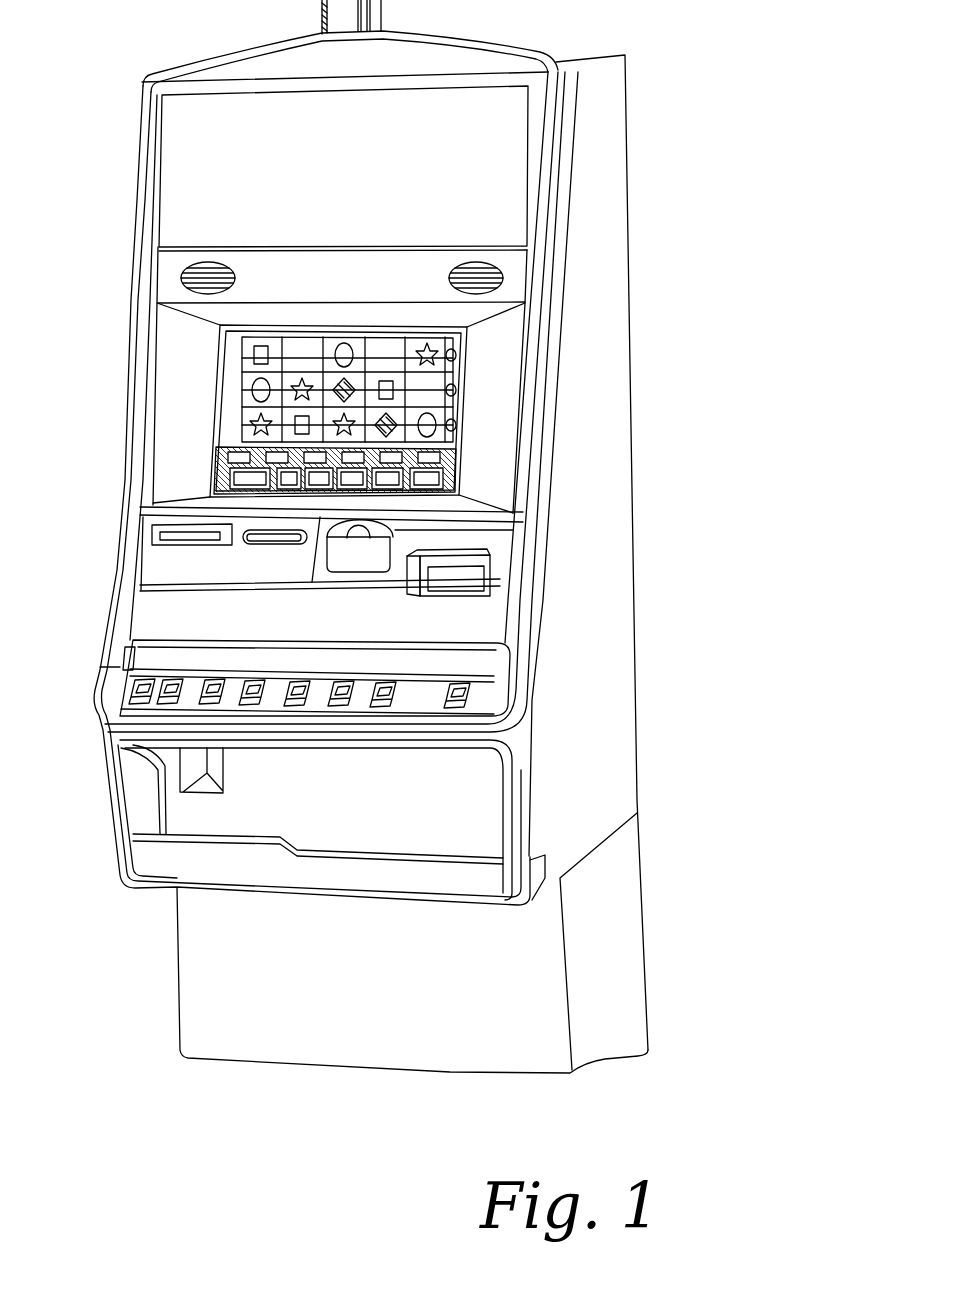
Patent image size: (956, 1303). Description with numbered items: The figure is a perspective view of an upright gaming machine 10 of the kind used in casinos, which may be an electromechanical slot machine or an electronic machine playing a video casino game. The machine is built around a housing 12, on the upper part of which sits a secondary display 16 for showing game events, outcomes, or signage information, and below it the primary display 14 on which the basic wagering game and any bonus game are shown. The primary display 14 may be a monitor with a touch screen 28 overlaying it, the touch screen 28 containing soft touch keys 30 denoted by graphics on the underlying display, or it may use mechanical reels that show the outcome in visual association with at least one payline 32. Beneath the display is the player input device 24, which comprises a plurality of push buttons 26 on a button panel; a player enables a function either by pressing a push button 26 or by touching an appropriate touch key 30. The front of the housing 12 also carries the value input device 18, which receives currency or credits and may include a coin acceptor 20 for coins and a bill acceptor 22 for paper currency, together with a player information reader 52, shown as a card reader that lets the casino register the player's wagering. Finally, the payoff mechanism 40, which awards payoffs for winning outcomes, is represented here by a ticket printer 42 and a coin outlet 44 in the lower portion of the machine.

The gaming machine 10 is at (101, 86).
The housing 12 is at (624, 193).
The primary display 14 is at (240, 363).
The secondary display 16 is at (190, 181).
The value input device 18 is at (395, 538).
The coin acceptor 20 is at (370, 555).
The bill acceptor 22 is at (458, 597).
The player input device 24 is at (457, 478).
The push buttons 26 is at (333, 690).
The touch screen 28 is at (445, 457).
The soft touch keys 30 is at (215, 491).
The payline 32 is at (273, 343).
The payoff mechanism 40 is at (145, 540).
The ticket printer 42 is at (152, 528).
The coin outlet 44 is at (184, 768).
The player information reader 52 is at (250, 545).